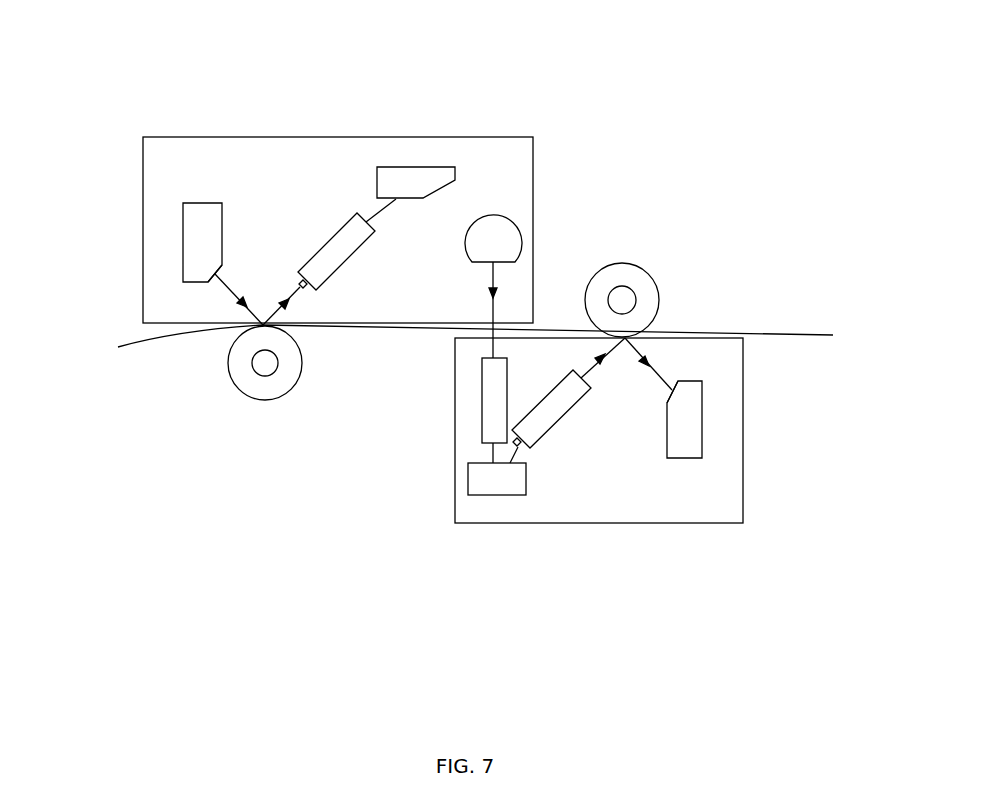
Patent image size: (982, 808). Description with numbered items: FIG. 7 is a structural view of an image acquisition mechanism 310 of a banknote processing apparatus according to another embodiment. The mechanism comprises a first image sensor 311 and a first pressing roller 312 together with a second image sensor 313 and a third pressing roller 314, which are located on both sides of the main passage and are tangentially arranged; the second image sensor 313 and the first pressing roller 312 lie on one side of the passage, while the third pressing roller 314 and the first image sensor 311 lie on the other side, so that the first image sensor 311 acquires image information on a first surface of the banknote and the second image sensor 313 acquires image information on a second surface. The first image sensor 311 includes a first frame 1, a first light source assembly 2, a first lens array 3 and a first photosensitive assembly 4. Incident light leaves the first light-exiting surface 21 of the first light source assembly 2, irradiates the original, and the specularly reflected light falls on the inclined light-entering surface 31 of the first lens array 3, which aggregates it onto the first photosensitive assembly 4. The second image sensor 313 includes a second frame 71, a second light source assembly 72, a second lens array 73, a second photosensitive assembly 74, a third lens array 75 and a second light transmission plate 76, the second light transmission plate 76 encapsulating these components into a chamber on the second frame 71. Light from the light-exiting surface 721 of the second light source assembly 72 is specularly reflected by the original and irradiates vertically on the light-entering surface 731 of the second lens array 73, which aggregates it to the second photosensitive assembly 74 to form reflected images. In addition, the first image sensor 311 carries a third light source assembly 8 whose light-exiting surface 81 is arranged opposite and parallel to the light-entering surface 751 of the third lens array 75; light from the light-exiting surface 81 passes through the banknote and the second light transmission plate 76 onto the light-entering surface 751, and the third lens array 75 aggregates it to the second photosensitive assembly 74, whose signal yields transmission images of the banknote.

The image acquisition mechanism 310 is at (582, 105).
The first image sensor 311 is at (248, 137).
The first pressing roller 312 is at (258, 385).
The second image sensor 313 is at (637, 523).
The third pressing roller 314 is at (628, 273).
The first frame 1 is at (314, 195).
The first light source assembly 2 is at (193, 243).
The first light-exiting surface 21 is at (210, 277).
The first lens array 3 is at (350, 243).
The light-entering surface 31 is at (307, 289).
The first photosensitive assembly 4 is at (396, 182).
The third light source assembly 8 is at (500, 230).
The light-exiting surface 81 is at (503, 258).
The second frame 71 is at (629, 468).
The second light source assembly 72 is at (693, 417).
The light-exiting surface 721 is at (675, 390).
The second lens array 73 is at (535, 420).
The light-entering surface 731 is at (578, 375).
The second photosensitive assembly 74 is at (492, 480).
The third lens array 75 is at (439, 434).
The light-entering surface 751 is at (487, 368).
The second light transmission plate 76 is at (713, 335).